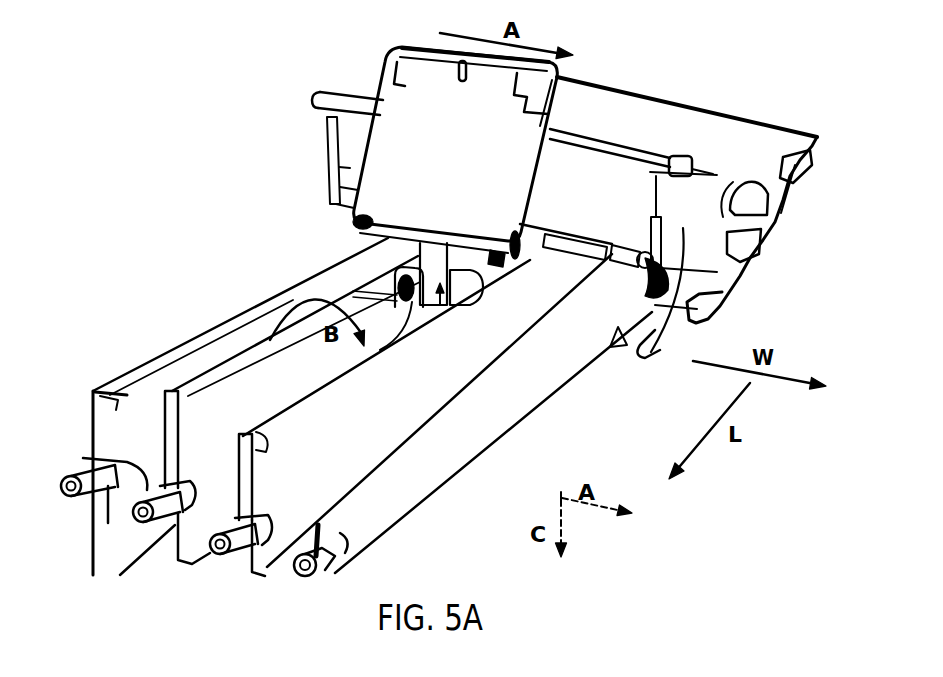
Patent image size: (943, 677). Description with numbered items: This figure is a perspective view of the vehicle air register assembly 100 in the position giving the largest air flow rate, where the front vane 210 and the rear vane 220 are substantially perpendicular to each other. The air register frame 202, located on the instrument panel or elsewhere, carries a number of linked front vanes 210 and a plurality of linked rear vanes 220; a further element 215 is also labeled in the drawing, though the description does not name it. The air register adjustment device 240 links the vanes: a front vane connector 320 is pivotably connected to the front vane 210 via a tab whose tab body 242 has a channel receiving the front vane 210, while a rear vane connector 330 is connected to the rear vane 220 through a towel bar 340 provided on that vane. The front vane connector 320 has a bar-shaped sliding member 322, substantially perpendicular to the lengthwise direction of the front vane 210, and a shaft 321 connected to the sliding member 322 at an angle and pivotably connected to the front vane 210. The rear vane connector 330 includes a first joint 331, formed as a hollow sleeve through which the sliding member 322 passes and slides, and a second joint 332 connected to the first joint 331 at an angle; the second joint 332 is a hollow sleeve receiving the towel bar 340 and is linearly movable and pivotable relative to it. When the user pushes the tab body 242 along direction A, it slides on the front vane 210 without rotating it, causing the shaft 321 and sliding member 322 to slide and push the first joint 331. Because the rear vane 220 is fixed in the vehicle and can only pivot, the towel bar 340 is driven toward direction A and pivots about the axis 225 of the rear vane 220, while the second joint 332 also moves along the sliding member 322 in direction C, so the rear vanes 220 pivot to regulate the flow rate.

The vehicle air register assembly 100 is at (742, 82).
The air register frame 202 is at (655, 328).
The front vane 210 is at (350, 167).
The pivot pin 215 is at (686, 155).
The rear vane 220 is at (200, 360).
The axis of the rear vane 225 is at (98, 460).
The air register adjustment device 240 is at (244, 203).
The tab body 242 is at (415, 133).
The front vane connector 320 is at (400, 237).
The shaft 321 is at (358, 212).
The sliding member 322 is at (433, 303).
The rear vane connector 330 is at (442, 288).
The first joint 331 is at (478, 272).
The second joint 332 is at (371, 297).
The towel bar 340 is at (372, 300).